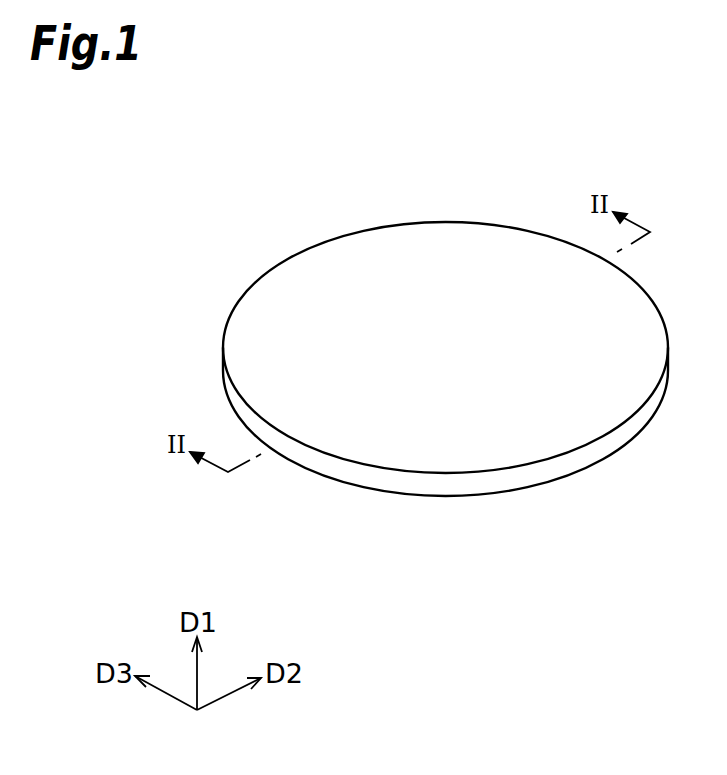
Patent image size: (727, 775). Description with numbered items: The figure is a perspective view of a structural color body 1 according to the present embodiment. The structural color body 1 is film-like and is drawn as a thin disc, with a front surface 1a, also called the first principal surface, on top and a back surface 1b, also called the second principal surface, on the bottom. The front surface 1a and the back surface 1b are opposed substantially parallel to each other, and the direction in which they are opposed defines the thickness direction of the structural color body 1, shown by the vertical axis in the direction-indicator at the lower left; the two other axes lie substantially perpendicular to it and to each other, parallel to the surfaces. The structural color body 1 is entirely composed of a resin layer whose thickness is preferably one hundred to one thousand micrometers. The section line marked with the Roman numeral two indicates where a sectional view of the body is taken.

The structural color body 1 is at (297, 201).
The front surface 1a is at (407, 255).
The back surface 1b is at (515, 495).